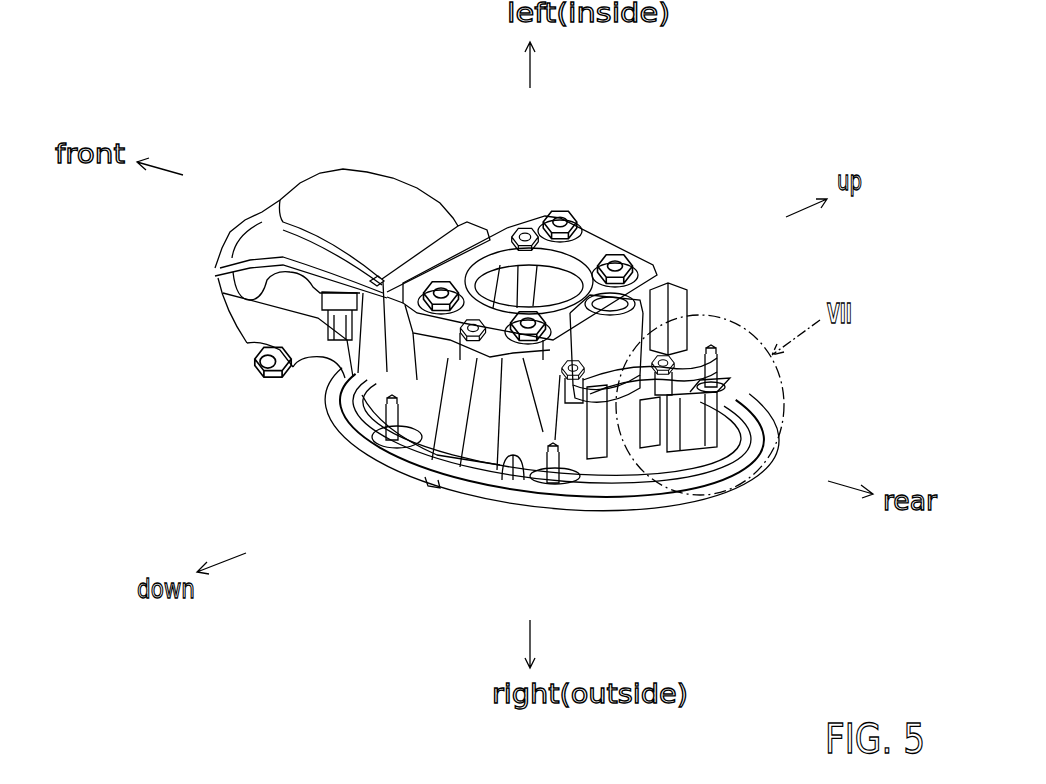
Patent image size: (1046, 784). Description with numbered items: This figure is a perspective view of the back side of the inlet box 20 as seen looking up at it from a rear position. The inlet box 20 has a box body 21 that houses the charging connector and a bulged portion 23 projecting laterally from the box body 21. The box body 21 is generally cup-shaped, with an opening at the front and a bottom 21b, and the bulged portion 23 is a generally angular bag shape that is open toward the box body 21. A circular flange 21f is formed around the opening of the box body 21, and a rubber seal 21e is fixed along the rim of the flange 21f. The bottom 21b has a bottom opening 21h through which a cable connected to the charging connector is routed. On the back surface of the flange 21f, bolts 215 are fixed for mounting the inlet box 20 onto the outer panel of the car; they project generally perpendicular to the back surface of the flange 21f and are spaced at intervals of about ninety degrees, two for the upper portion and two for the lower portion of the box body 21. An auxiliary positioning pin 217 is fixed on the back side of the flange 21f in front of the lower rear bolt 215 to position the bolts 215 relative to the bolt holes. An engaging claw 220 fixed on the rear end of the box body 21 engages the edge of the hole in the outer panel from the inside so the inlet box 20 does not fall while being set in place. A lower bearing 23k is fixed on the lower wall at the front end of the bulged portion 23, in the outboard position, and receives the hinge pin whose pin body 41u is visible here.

The inlet box 20 is at (452, 172).
The box body 21 is at (578, 247).
The bottom 21b is at (648, 262).
The seal 21e is at (378, 478).
The flange 21f is at (482, 485).
The bottom opening 21h is at (512, 242).
The bulged portion 23 is at (324, 184).
The lower bearing 23k is at (254, 340).
The pin body 41u is at (258, 362).
The bolts 215 is at (722, 360).
The auxiliary positioning pin 217 is at (510, 480).
The engaging claw 220 is at (712, 445).